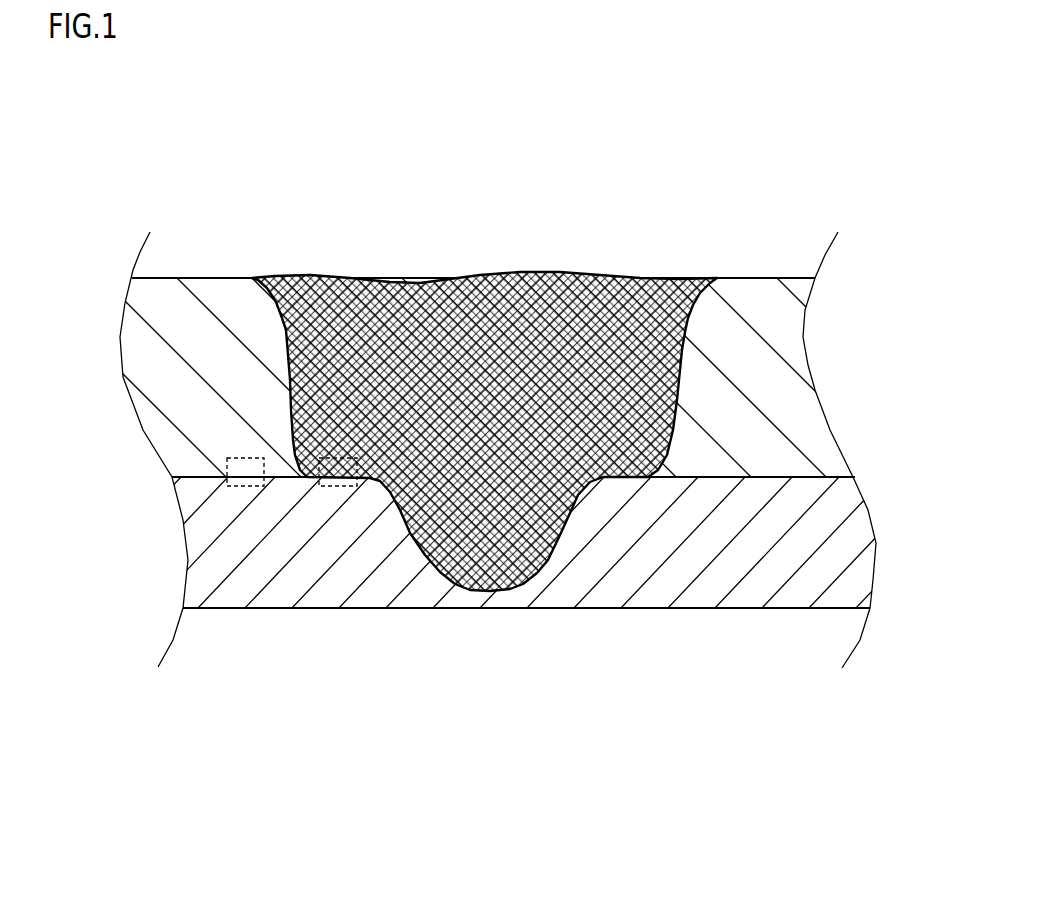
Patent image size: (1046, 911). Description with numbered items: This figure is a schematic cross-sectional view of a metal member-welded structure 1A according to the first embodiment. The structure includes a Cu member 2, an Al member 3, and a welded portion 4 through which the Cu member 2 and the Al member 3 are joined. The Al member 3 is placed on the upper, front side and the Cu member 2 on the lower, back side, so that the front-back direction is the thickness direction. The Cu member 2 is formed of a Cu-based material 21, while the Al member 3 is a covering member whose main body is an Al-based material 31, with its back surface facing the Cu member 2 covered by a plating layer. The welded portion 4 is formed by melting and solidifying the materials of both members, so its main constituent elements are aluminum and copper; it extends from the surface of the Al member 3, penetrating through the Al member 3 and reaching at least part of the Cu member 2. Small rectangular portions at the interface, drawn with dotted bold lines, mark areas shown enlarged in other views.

The metal member-welded structure 1A is at (273, 250).
The Cu member 2 is at (775, 613).
The Cu-based material 21 is at (667, 590).
The Al member 3 is at (787, 277).
The Al-based material 31 is at (730, 297).
The welded portion 4 is at (503, 535).